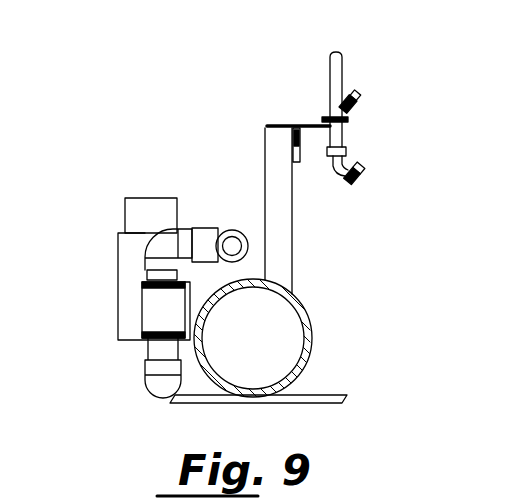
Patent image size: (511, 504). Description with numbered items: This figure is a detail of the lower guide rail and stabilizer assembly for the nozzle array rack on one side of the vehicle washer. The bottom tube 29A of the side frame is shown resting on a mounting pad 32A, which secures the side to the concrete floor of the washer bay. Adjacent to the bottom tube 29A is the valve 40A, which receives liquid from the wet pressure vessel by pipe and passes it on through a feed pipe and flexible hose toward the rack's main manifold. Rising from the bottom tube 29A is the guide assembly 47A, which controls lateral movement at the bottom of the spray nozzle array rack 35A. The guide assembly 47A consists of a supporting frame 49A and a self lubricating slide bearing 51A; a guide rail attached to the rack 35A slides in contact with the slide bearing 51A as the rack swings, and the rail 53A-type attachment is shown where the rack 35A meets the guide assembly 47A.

The bottom tube 29A is at (310, 350).
The mounting pad 32A is at (207, 400).
The spray nozzle array rack 35A is at (352, 58).
The valve 40A is at (153, 320).
The guide assembly 47A is at (247, 110).
The supporting frame 49A is at (275, 158).
The self lubricating slide bearing 51A is at (291, 137).
The clamp 53A is at (310, 123).